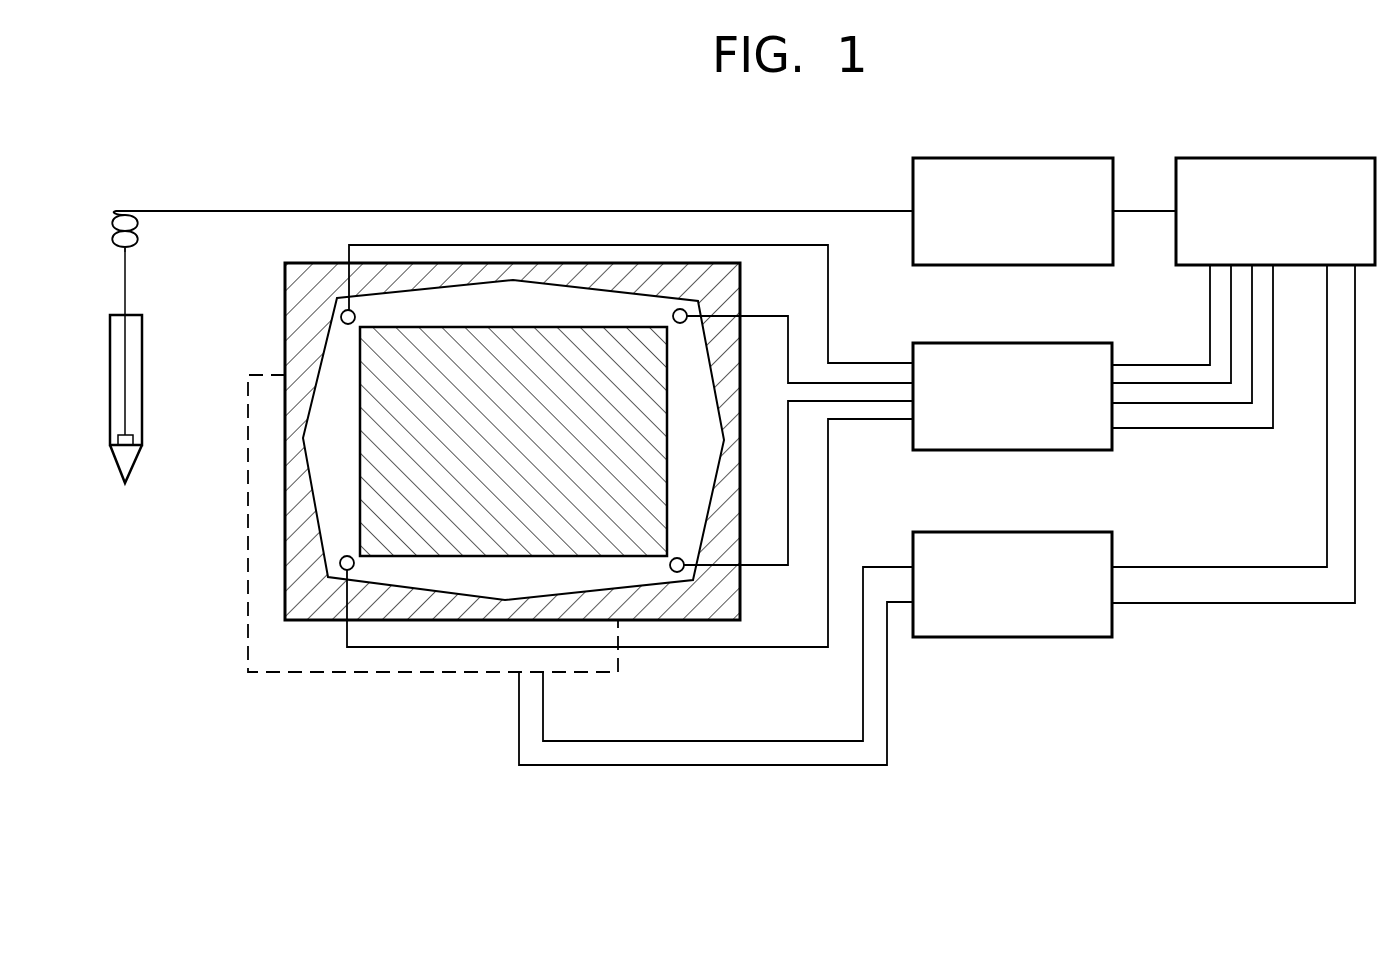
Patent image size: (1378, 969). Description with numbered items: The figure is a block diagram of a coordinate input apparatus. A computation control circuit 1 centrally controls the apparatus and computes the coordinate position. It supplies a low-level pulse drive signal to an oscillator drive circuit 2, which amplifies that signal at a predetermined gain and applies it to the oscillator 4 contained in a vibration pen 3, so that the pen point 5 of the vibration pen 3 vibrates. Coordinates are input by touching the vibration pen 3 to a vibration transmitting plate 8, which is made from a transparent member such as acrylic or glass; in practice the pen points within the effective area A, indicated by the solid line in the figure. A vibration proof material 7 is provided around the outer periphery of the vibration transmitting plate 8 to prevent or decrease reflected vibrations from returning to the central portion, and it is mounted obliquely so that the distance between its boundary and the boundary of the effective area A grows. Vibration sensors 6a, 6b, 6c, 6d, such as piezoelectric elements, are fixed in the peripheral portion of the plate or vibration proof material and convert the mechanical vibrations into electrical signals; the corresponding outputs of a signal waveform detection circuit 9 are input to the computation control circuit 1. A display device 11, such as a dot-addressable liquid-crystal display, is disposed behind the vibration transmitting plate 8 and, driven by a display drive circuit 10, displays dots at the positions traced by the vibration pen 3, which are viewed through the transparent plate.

The computation control circuit 1 is at (1288, 158).
The oscillator drive circuit 2 is at (1042, 158).
The vibration pen 3 is at (143, 326).
The oscillator 4 is at (143, 413).
The pen point 5 is at (133, 468).
The vibration sensor 6a is at (355, 316).
The vibration sensor 6b is at (673, 316).
The vibration sensor 6c is at (355, 563).
The vibration sensor 6d is at (670, 565).
The vibration proof material 7 is at (571, 262).
The vibration transmitting plate 8 is at (430, 302).
The signal waveform detection circuit 9 is at (1050, 343).
The display drive circuit 10 is at (1034, 532).
The display device 11 is at (459, 675).
The effective area A is at (439, 552).